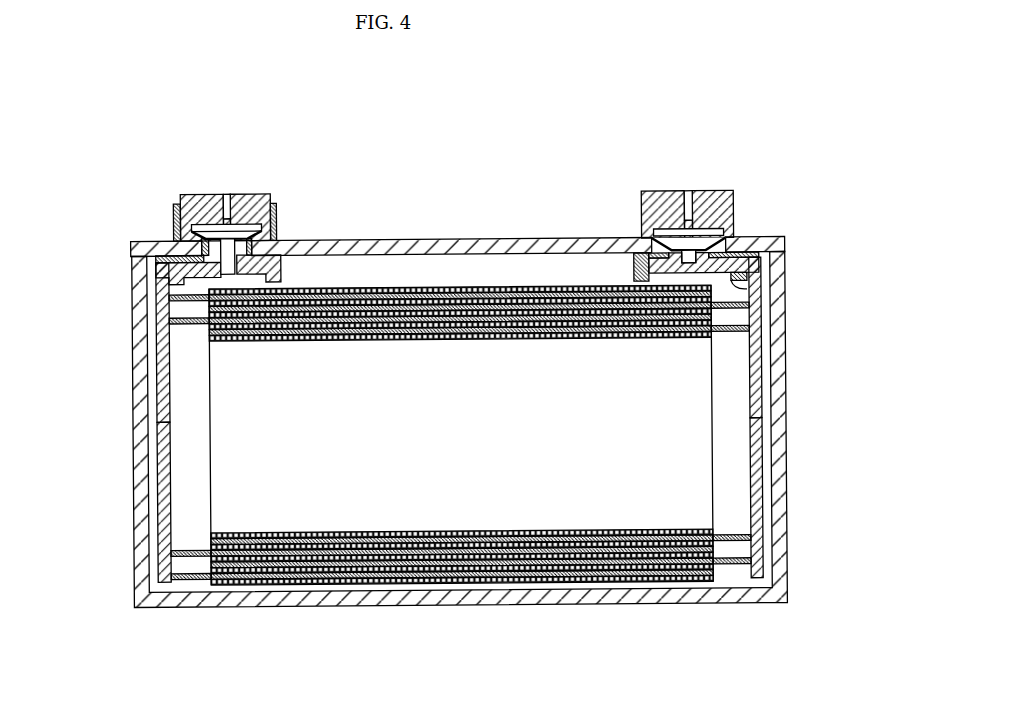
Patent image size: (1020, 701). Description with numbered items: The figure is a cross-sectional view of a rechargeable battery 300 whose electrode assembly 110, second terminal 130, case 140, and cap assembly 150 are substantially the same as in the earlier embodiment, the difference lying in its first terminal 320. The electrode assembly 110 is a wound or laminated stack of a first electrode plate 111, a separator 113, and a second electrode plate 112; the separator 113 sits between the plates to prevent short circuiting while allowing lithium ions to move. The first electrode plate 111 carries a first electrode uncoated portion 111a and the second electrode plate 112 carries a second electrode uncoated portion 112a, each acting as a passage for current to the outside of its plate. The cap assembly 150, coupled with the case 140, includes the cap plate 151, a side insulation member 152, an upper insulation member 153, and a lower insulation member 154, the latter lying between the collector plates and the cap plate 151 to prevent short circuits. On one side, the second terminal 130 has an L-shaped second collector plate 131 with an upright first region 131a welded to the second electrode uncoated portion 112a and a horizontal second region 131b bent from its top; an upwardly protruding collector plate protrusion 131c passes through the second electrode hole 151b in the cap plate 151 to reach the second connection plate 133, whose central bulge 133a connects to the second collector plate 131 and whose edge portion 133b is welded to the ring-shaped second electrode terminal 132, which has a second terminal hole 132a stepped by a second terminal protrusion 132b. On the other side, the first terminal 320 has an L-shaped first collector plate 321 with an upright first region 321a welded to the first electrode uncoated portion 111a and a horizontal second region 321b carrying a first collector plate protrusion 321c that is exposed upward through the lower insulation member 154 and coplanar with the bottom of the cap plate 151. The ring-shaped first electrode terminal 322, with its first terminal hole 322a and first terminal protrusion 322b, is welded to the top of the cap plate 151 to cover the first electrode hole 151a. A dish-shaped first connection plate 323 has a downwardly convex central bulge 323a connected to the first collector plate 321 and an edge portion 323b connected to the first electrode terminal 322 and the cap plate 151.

The rechargeable battery 300 is at (782, 95).
The electrode assembly 110 is at (463, 478).
The first electrode plate 111 is at (615, 566).
The first electrode uncoated portion 111a is at (735, 567).
The second electrode plate 112 is at (338, 584).
The second electrode uncoated portion 112a is at (190, 580).
The separator 113 is at (478, 585).
The second terminal 130 is at (241, 206).
The second collector plate 131 is at (141, 422).
The first region 131a is at (162, 494).
The second region 131b is at (212, 309).
The collector plate protrusion 131c is at (225, 268).
The second electrode terminal 132 is at (231, 185).
The second terminal hole 132a is at (229, 210).
The second terminal protrusion 132b is at (212, 195).
The second connection plate 133 is at (286, 216).
The central bulge 133a is at (265, 275).
The edge portion 133b is at (253, 250).
The case 140 is at (780, 543).
The cap assembly 150 is at (422, 210).
The cap plate 151 is at (503, 238).
The first electrode hole 151a is at (665, 231).
The second electrode hole 151b is at (205, 220).
The side insulation member 152 is at (200, 245).
The upper insulation member 153 is at (175, 216).
The lower insulation member 154 is at (157, 257).
The first terminal 320 is at (716, 203).
The first collector plate 321 is at (707, 391).
The first region 321a is at (760, 496).
The second region 321b is at (748, 291).
The first collector plate protrusion 321c is at (640, 268).
The first electrode terminal 322 is at (667, 183).
The first terminal hole 322a is at (690, 212).
The first terminal protrusion 322b is at (652, 202).
The first connection plate 323 is at (748, 227).
The central bulge 323a is at (760, 255).
The edge portion 323b is at (745, 246).